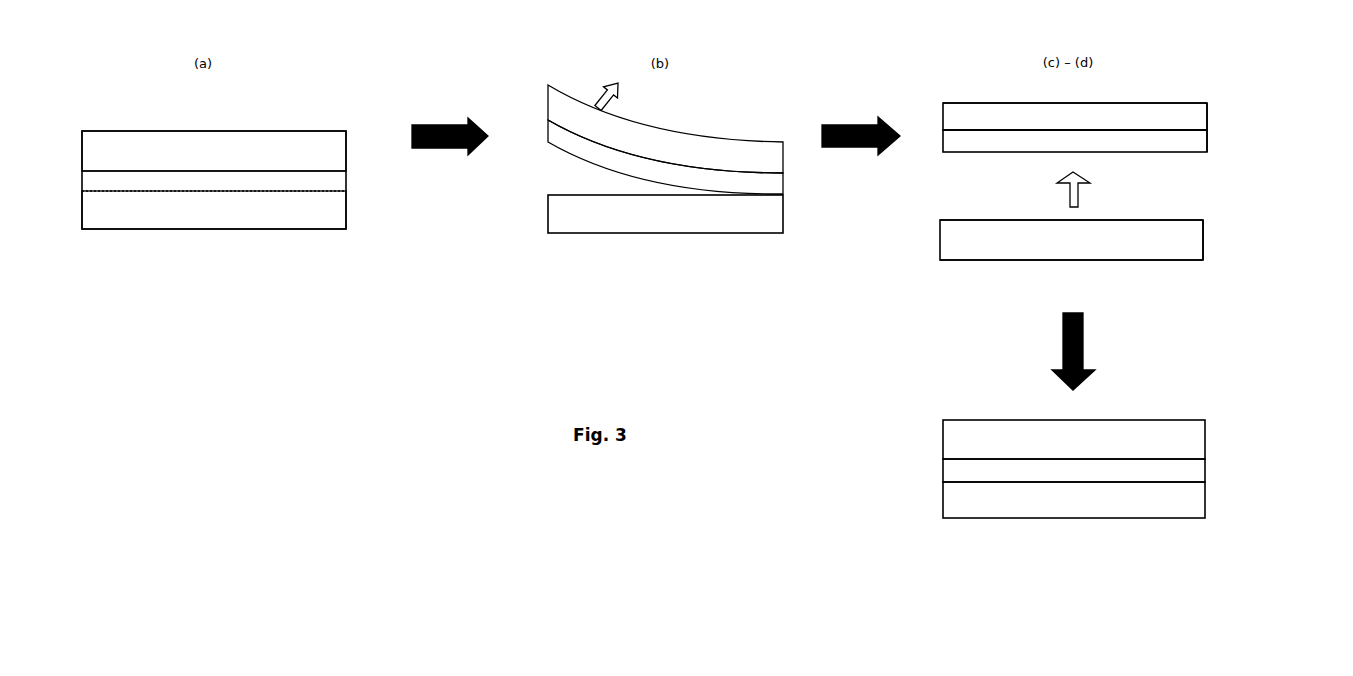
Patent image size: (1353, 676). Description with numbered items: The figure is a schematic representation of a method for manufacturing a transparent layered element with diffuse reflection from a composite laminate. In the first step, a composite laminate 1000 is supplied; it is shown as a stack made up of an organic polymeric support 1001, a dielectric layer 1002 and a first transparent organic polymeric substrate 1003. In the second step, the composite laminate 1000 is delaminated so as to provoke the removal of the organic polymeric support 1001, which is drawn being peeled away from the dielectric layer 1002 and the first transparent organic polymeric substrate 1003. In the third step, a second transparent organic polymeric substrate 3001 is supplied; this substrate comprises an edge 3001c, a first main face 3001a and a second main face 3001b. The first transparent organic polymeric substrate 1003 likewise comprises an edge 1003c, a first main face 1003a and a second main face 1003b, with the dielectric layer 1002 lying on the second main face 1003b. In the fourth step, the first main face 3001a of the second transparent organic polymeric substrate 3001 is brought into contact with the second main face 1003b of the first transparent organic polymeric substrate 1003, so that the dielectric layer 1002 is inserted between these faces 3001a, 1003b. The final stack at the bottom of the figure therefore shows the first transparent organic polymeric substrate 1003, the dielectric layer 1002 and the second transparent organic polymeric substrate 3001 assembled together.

The composite laminate 1000 is at (120, 108).
The organic polymeric support 1001 is at (167, 217).
The dielectric layer 1002 is at (297, 178).
The first transparent organic polymeric substrate 1003 is at (230, 157).
The first main face 1003a is at (978, 100).
The second main face 1003b is at (1132, 132).
The edge 1003c is at (1207, 125).
The second transparent organic polymeric substrate 3001 is at (1007, 243).
The first main face 3001a is at (948, 215).
The second main face 3001b is at (1133, 262).
The edge 3001c is at (1205, 242).